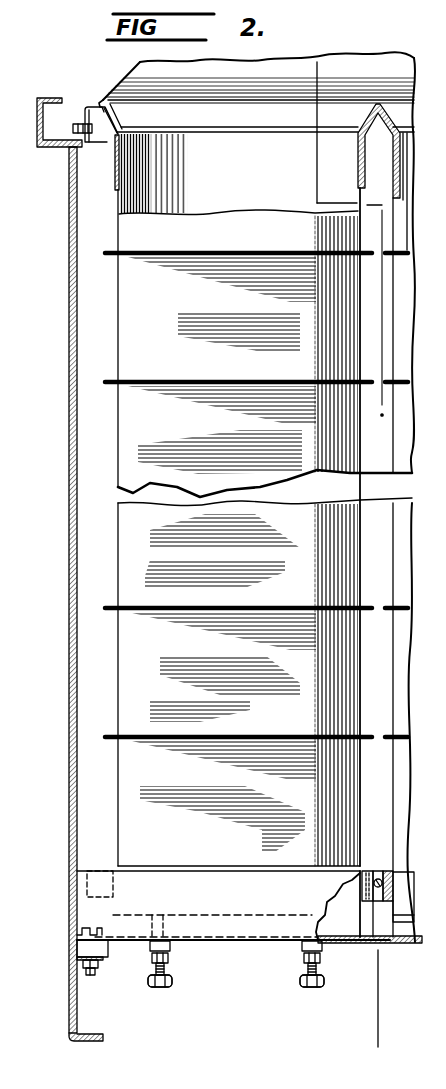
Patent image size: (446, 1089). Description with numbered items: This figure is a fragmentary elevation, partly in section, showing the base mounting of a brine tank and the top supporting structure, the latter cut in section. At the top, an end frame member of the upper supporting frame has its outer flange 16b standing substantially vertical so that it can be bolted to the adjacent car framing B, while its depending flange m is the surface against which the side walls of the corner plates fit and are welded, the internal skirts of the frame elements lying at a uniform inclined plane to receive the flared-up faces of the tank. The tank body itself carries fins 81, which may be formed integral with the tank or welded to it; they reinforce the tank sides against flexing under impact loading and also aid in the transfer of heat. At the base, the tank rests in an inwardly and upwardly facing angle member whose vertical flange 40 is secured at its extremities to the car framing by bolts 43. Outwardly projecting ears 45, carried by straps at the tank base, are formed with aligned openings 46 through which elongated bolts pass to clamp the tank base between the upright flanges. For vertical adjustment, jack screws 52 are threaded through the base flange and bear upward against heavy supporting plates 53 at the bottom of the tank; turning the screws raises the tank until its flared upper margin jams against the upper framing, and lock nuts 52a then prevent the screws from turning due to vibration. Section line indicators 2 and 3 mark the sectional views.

The car framing B is at (58, 150).
The outer flange 16b is at (86, 110).
The depending flange m is at (104, 112).
The section line 3- 3 is at (292, 70).
The fins 81 is at (259, 380).
The vertical flange 40 is at (282, 893).
The bolts 43 is at (99, 977).
The jack screws 52 is at (171, 965).
The lock nuts 52a is at (148, 962).
The supporting plates 53 is at (358, 920).
The ears 45 is at (376, 878).
The openings 46 is at (381, 905).
The section line 2- 2 is at (350, 1028).